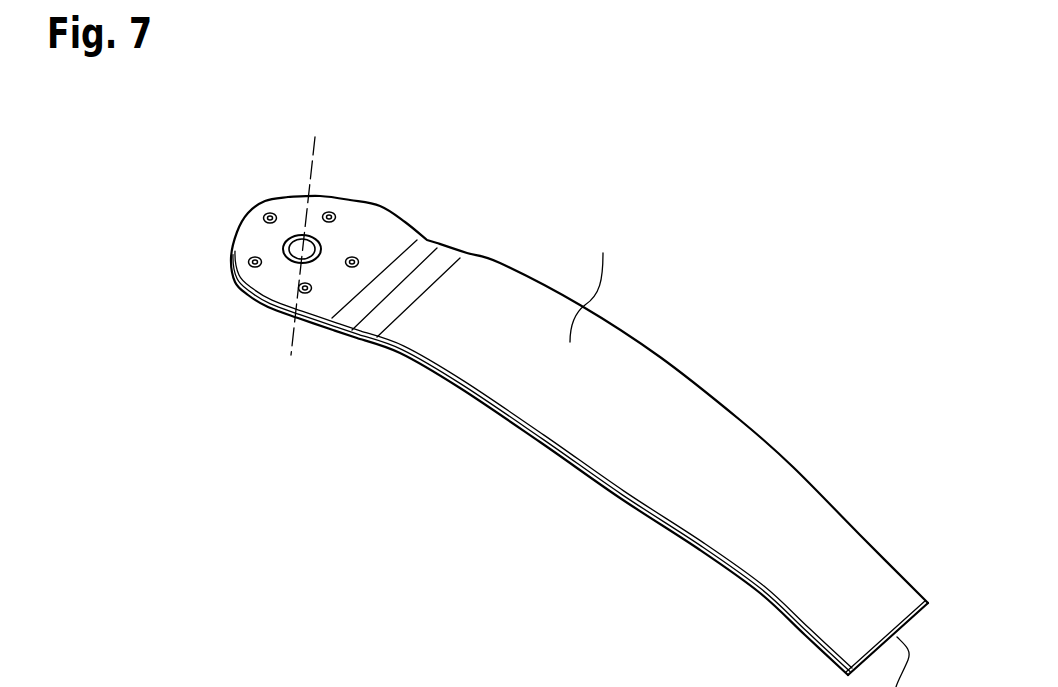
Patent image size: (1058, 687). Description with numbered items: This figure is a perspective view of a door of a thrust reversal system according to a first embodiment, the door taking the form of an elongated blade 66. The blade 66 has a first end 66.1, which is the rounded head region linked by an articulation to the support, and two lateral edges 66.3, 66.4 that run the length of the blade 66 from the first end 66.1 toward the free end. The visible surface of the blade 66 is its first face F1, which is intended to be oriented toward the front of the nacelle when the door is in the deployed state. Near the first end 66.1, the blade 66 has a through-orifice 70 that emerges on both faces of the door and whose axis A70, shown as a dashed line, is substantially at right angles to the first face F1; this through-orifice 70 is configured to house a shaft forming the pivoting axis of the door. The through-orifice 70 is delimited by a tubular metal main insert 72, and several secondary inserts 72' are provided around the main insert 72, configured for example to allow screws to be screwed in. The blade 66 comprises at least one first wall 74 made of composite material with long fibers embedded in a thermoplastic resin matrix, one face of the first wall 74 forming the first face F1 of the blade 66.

The blade 66 is at (668, 334).
The first end 66.1 is at (247, 212).
The lateral edge 66.3 is at (740, 420).
The lateral edge 66.4 is at (512, 432).
The through-orifice 70 is at (309, 236).
The main insert 72 is at (363, 223).
The secondary inserts 72' is at (263, 260).
The first wall 74 is at (807, 528).
The axis of the through-orifice A70 is at (310, 181).
The first face F1 is at (593, 285).